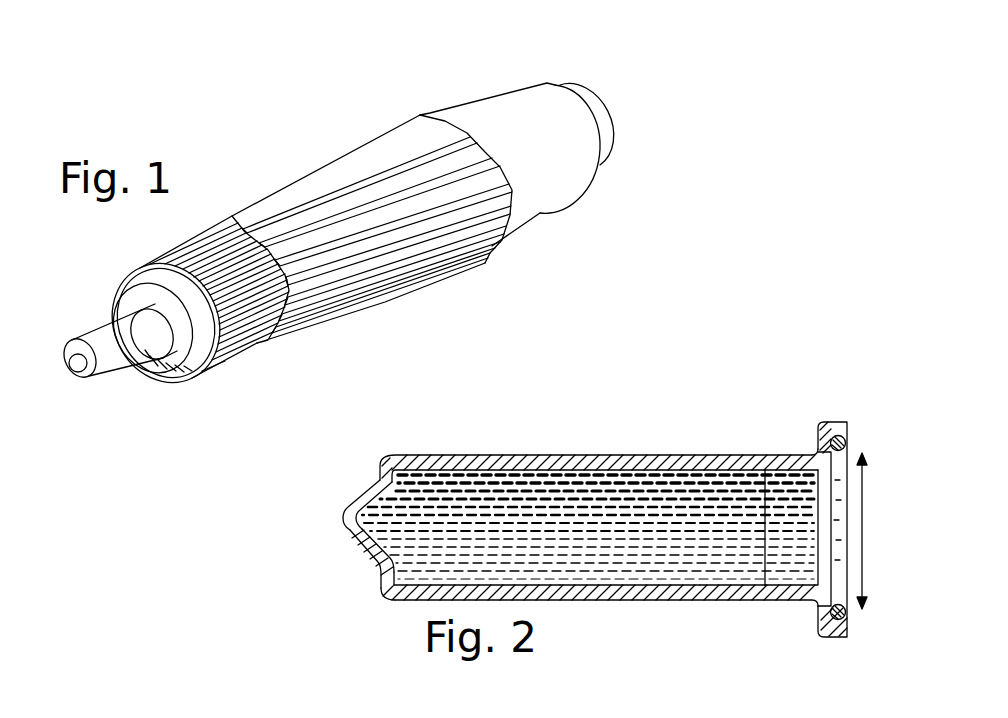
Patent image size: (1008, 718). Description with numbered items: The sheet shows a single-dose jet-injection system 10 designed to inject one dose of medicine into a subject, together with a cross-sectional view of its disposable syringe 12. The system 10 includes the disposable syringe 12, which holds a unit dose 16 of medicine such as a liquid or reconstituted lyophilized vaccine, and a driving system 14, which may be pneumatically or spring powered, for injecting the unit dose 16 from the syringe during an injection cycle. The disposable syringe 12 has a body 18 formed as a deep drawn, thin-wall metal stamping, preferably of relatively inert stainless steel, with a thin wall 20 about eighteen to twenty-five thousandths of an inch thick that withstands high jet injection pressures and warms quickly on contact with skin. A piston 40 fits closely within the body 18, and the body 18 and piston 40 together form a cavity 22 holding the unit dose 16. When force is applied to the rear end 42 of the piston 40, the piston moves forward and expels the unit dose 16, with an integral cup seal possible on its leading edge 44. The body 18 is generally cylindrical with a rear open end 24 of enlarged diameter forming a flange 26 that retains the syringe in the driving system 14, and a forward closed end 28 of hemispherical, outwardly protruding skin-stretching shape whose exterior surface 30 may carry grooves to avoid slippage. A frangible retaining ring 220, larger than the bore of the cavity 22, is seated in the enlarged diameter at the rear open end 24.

In FIG. 1, the single-dose jet-injection system 10 is at (352, 84).
In FIG. 1, the disposable syringe 12 is at (72, 322).
In FIG. 2, the disposable syringe 12 is at (540, 392).
In FIG. 1, the driving system 14 is at (262, 176).
In FIG. 2, the unit dose 16 is at (612, 578).
In FIG. 1, the body 18 is at (90, 334).
In FIG. 2, the body 18 is at (650, 437).
In FIG. 2, the thin wall 20 is at (697, 598).
In FIG. 2, the cavity 22 is at (689, 533).
In FIG. 2, the rear open end 24 is at (864, 534).
In FIG. 2, the flange 26 is at (829, 449).
In FIG. 2, the forward closed end 28 is at (340, 492).
In FIG. 2, the exterior surface 30 is at (343, 537).
In FIG. 2, the piston 40 is at (787, 513).
In FIG. 2, the rear end 42 is at (816, 604).
In FIG. 2, the leading edge 44 is at (750, 560).
In FIG. 2, the frangible retaining ring 220 is at (851, 446).